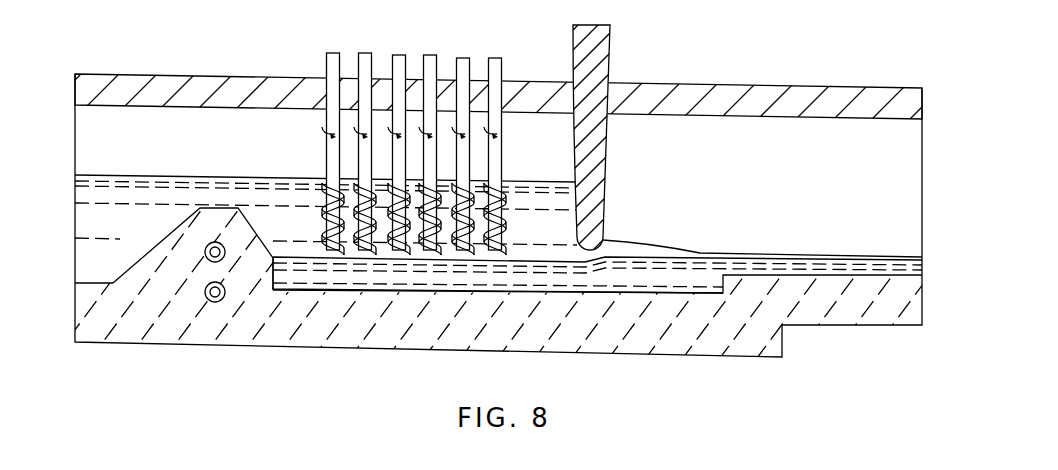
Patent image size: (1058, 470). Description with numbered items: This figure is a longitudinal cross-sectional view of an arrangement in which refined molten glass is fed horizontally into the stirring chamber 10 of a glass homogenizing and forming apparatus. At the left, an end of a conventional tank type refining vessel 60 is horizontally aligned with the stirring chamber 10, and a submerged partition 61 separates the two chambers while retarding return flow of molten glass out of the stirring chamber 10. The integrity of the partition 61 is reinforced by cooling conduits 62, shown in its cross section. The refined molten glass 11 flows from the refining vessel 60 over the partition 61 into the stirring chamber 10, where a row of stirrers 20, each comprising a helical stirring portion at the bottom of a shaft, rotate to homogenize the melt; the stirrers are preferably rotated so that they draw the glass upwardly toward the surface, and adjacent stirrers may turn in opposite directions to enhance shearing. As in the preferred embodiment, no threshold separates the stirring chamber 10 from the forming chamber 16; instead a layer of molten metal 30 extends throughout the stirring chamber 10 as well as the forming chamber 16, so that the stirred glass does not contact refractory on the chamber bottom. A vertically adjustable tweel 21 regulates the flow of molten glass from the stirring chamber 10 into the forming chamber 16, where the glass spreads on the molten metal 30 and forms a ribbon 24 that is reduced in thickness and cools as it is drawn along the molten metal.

The refining vessel 60 is at (105, 74).
The stirring chamber 10 is at (310, 78).
The stirrers 20 is at (428, 54).
The forming chamber 16 is at (724, 85).
The tweel 21 is at (600, 148).
The refined molten glass 11 is at (522, 180).
The molten metal 30 is at (515, 262).
The ribbon 24 is at (860, 257).
The submerged partition 61 is at (177, 228).
The cooling conduits 62 is at (206, 289).